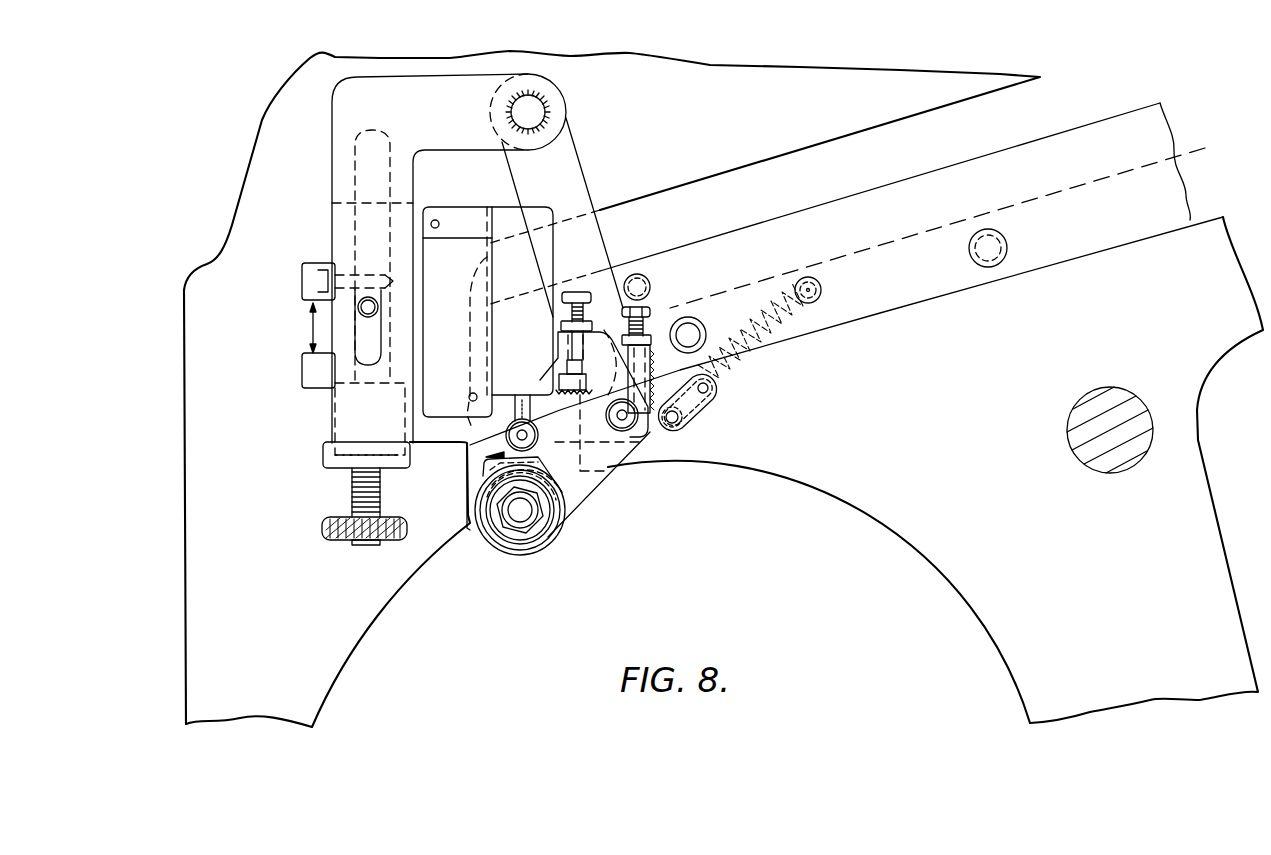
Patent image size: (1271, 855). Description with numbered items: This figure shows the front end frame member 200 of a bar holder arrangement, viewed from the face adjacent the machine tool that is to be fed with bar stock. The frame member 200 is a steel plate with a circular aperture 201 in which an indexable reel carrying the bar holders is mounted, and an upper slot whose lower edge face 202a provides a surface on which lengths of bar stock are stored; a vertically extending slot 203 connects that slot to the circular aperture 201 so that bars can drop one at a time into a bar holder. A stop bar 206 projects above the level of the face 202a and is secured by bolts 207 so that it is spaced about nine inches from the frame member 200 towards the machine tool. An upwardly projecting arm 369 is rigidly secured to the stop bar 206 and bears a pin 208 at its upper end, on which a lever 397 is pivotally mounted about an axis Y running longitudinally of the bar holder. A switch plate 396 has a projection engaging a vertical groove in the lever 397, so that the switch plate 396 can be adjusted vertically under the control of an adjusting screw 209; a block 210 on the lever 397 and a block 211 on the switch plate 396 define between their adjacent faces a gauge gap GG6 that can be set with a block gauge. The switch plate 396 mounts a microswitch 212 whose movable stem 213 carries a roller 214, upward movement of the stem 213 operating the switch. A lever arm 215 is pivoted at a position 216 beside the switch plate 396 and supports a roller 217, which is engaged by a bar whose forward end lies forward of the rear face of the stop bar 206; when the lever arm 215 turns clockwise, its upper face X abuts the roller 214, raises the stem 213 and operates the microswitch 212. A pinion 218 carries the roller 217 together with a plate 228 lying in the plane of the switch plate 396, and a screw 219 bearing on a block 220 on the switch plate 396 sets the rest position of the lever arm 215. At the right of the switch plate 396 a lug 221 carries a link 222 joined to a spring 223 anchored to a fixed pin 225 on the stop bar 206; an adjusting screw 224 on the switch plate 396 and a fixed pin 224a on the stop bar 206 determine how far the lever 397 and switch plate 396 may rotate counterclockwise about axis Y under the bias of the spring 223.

The frame member 200 is at (1034, 404).
The circular aperture 201 is at (813, 490).
The face 202a is at (1193, 152).
The vertically extending slot 203 is at (470, 526).
The stop bar 206 is at (1057, 250).
The bolts 207 is at (993, 255).
The pin 208 is at (548, 112).
The adjusting screw 209 is at (352, 494).
The block 210 is at (302, 285).
The block 211 is at (318, 388).
The microswitch 212 is at (517, 300).
The movable stem 213 is at (515, 408).
The roller 214 is at (486, 455).
The lever arm 215 is at (597, 462).
The pivot 216 is at (627, 420).
The roller 217 is at (549, 543).
The pinion 218 is at (522, 520).
The screw 219 is at (558, 322).
The block 220 is at (572, 376).
The lug 221 is at (718, 383).
The link 222 is at (703, 406).
The spring 223 is at (796, 327).
The adjusting screw 224 is at (650, 309).
The fixed pin 224a is at (655, 279).
The fixed pin 225 is at (820, 290).
The plate 228 is at (497, 535).
The upwardly projecting arm 369 is at (586, 186).
The switch plate 396 is at (425, 210).
The lever 397 is at (476, 118).
The gauge gap GG6 is at (310, 322).